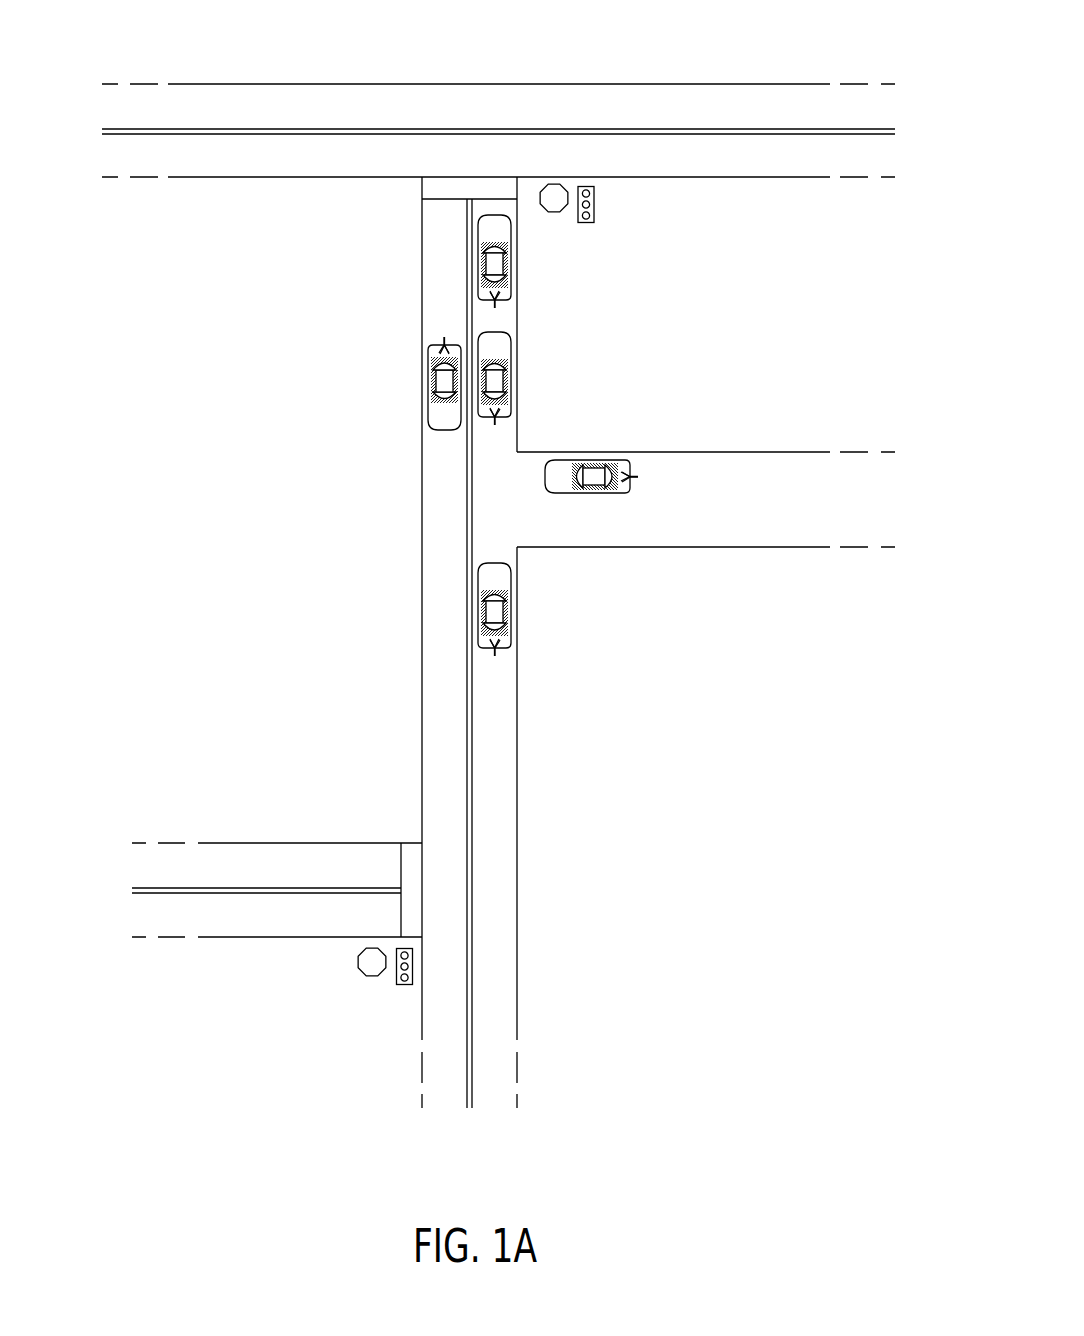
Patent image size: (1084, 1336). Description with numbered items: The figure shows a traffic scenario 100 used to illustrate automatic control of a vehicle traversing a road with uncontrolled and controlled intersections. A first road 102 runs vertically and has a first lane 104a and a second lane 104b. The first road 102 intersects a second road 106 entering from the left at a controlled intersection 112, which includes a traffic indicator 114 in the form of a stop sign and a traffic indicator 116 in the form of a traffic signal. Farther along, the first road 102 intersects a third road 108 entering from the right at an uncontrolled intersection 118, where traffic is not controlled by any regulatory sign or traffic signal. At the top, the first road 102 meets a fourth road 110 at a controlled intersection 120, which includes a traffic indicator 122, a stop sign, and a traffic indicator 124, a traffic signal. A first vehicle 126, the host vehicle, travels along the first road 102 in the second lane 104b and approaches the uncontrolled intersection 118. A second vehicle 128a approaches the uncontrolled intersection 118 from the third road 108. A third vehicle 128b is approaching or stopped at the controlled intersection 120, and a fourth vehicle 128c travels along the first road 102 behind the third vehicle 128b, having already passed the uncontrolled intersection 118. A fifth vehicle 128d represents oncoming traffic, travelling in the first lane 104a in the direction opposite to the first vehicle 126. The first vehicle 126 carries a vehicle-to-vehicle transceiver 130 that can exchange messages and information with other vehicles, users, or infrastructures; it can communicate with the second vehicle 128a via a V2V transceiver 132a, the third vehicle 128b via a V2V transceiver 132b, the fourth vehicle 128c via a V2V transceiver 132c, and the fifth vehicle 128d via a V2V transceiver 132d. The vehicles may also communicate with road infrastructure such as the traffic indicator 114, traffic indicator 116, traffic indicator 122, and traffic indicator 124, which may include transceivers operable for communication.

The traffic scenario 100 is at (736, 42).
The first road 102 is at (517, 880).
The first lane 104a is at (444, 1100).
The second lane 104b is at (495, 1100).
The second road 106 is at (310, 843).
The third road 108 is at (725, 452).
The fourth road 110 is at (723, 178).
The controlled intersection 112 is at (331, 954).
The traffic indicator 114 is at (372, 980).
The traffic indicator 116 is at (404, 988).
The uncontrolled intersection 118 is at (530, 560).
The controlled intersection 120 is at (528, 200).
The traffic indicator 122 is at (560, 215).
The traffic indicator 124 is at (597, 205).
The first vehicle 126 is at (510, 640).
The second vehicle 128a is at (585, 495).
The third vehicle 128b is at (478, 285).
The fourth vehicle 128c is at (512, 380).
The fifth vehicle 128d is at (432, 400).
The V2V transceiver 130 is at (497, 652).
The V2V transceiver 132a is at (623, 493).
The V2V transceiver 132b is at (490, 300).
The V2V transceiver 132c is at (500, 418).
The V2V transceiver 132d is at (438, 349).